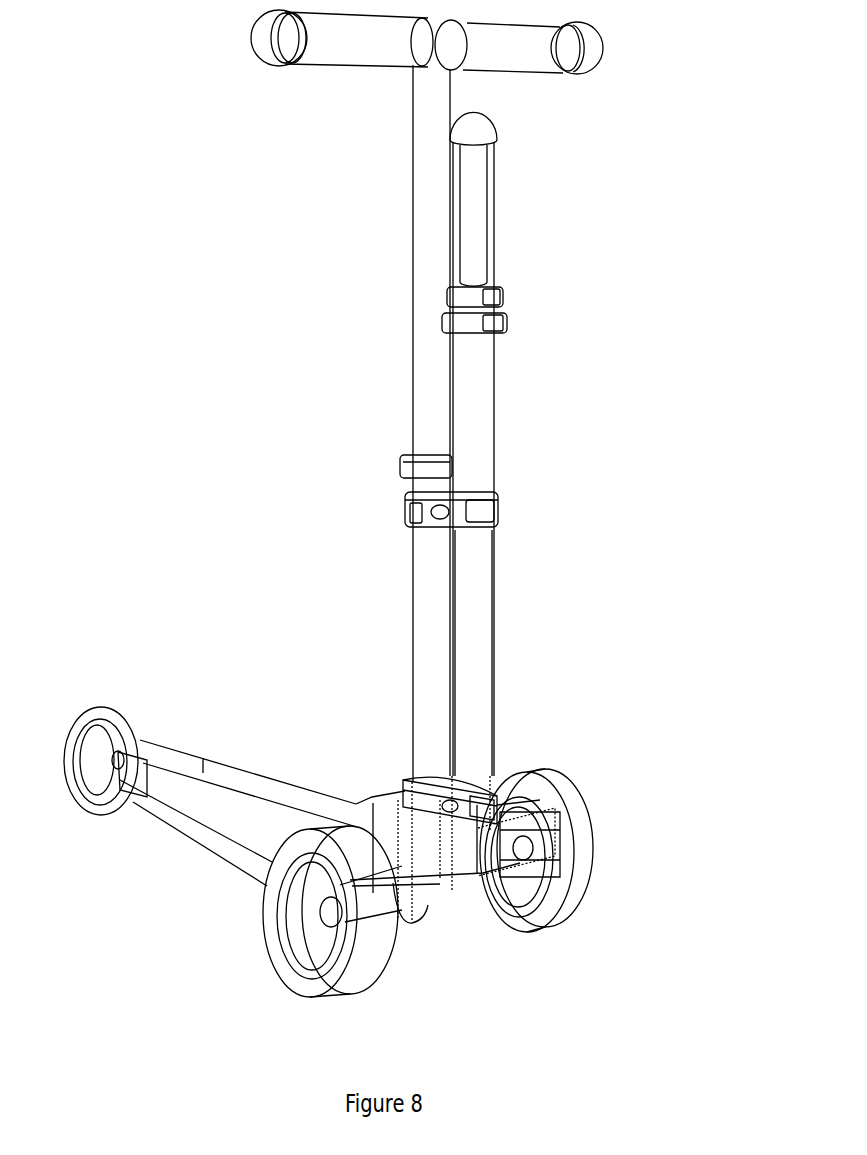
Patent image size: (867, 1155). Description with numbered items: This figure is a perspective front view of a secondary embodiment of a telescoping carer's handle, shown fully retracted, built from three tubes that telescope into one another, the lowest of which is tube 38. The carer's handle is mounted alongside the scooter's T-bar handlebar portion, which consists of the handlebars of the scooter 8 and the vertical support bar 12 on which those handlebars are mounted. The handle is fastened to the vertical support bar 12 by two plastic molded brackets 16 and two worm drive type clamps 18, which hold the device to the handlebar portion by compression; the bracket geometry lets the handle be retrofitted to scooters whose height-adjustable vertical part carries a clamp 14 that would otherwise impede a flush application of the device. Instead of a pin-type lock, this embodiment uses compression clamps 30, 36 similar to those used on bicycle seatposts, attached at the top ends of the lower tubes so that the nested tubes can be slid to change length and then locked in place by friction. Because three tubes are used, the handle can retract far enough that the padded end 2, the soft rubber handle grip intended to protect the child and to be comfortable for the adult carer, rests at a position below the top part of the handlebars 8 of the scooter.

The handlebars of the scooter 8 is at (233, 34).
The padded end 2 is at (497, 133).
The vertical support bar 12 is at (398, 320).
The compression clamp 30 is at (510, 290).
The lower collar 36 is at (515, 335).
The clamp 14 is at (392, 465).
The worm drive type clamp 18 is at (405, 505).
The plastic molded bracket 16 is at (500, 510).
The tube 38 is at (452, 653).